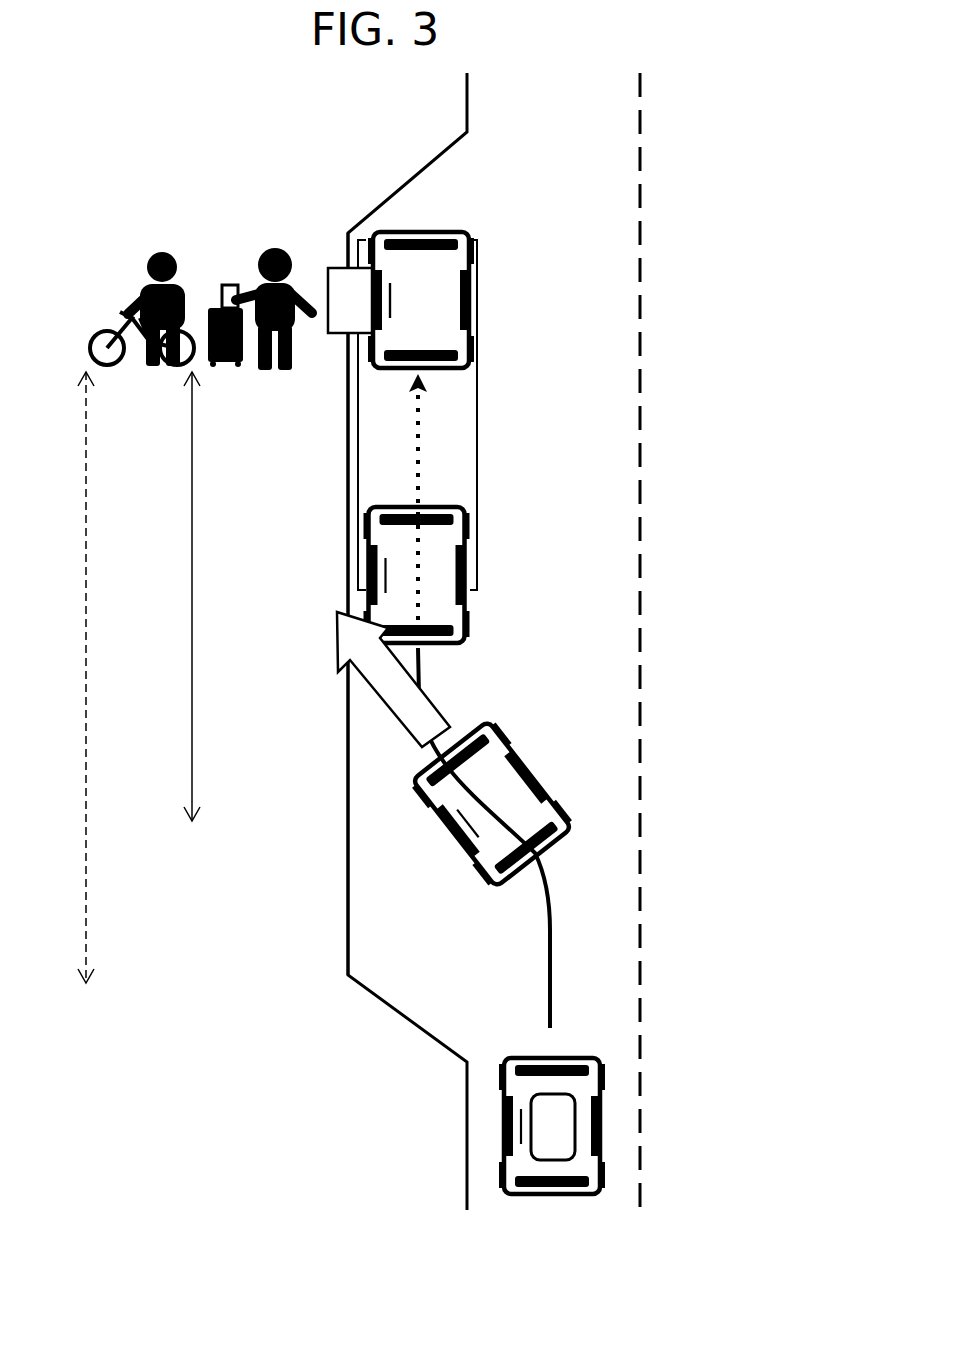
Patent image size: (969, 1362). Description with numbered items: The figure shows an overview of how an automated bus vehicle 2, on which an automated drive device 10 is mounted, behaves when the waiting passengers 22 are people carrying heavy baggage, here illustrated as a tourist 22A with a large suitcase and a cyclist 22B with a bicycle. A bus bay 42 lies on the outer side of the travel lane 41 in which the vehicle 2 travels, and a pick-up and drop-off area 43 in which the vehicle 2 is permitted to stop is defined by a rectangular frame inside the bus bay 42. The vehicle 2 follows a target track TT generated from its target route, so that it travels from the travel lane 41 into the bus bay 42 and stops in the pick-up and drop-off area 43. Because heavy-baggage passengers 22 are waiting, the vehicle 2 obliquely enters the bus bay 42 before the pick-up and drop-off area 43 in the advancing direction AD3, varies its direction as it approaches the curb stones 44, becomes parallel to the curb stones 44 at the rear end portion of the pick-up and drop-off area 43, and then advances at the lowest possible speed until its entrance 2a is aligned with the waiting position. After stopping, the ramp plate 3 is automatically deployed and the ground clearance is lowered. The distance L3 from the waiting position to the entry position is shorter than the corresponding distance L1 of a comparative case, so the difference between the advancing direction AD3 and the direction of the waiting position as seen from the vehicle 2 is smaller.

The vehicle 2 is at (470, 316).
The entrance 2a is at (372, 318).
The ramp plate 3 is at (332, 268).
The automated drive device 10 is at (532, 1097).
The passengers 22 is at (201, 241).
The tourist 22A is at (260, 273).
The cyclist 22B is at (160, 252).
The travel lane 41 is at (592, 668).
The bus bay 42 is at (380, 857).
The pick-up and drop-off area 43 is at (477, 410).
The curb stones 44 is at (349, 750).
The advancing direction AD3 is at (338, 640).
The target track TT is at (545, 950).
The distance L1 is at (63, 677).
The distance L3 is at (173, 596).